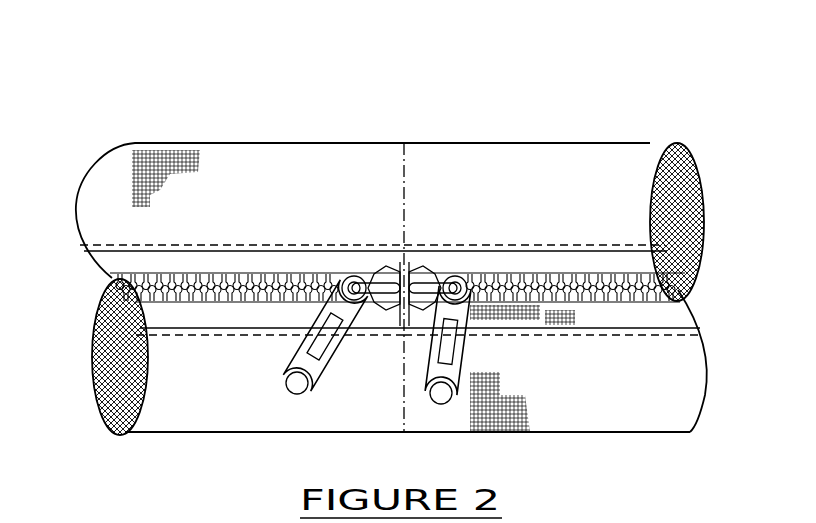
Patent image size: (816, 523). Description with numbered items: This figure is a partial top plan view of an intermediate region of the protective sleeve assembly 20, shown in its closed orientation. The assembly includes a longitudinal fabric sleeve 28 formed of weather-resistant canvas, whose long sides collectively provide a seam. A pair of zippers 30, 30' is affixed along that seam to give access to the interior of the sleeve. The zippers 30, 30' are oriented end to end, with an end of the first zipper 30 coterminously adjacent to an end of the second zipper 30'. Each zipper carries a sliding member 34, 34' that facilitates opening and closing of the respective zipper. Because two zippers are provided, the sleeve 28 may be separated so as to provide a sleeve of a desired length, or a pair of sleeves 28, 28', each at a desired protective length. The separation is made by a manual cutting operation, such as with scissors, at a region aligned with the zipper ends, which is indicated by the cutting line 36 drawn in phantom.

The protective sleeve assembly 20 is at (157, 62).
The fabric sleeve 28 is at (554, 203).
The fabric sleeve 28' is at (236, 190).
The zipper 30 is at (555, 386).
The zipper 30' is at (248, 381).
The sliding member 34 is at (483, 253).
The sliding member 34' is at (320, 248).
The cutting line 36 is at (406, 192).